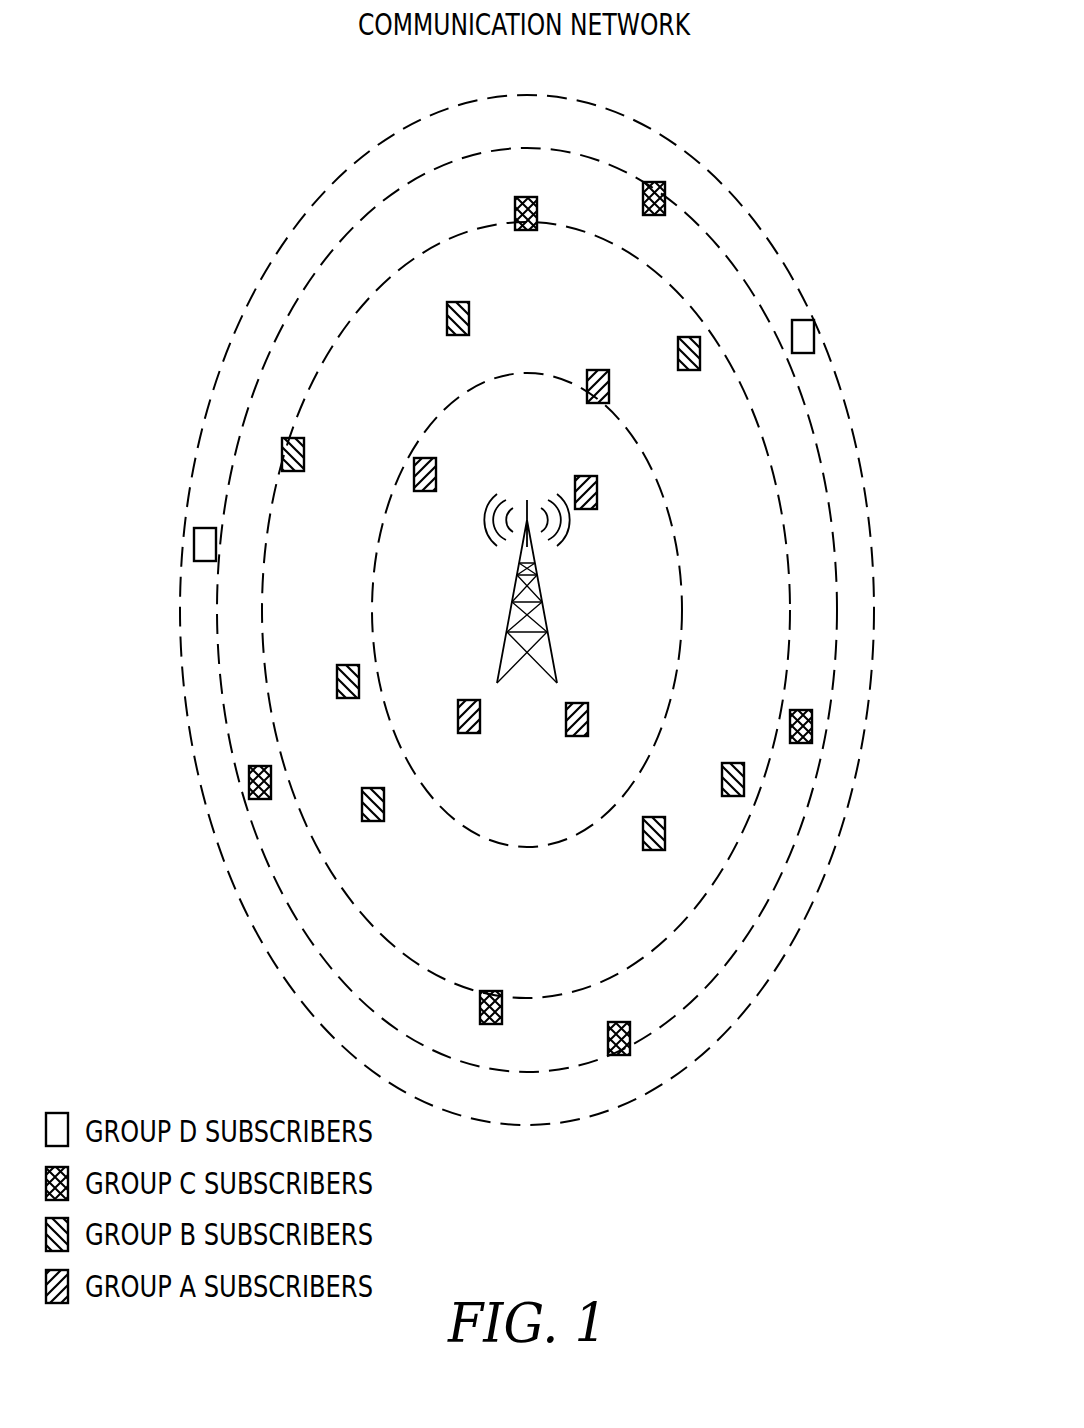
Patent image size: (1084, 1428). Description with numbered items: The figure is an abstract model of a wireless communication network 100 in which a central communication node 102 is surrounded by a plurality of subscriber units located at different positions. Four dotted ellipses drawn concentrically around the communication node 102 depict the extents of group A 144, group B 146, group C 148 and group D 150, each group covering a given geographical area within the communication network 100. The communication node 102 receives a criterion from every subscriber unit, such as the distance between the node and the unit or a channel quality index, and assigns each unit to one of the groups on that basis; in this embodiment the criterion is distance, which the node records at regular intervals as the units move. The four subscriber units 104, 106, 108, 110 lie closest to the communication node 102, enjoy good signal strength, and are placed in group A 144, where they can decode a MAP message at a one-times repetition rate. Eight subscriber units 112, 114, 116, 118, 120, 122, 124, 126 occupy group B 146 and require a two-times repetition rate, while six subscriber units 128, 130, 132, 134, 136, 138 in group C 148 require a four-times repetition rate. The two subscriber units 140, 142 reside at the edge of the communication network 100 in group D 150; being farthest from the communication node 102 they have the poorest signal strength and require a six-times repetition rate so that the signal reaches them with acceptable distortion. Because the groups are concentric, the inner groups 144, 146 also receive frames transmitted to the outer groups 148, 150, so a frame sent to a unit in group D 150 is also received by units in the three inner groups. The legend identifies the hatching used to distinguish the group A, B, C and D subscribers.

The wireless communication network 100 is at (870, 73).
The communication node 102 is at (495, 530).
The subscriber unit 104 is at (586, 476).
The subscriber unit 106 is at (578, 703).
The subscriber unit 108 is at (469, 700).
The subscriber unit 110 is at (425, 458).
The subscriber unit 112 is at (598, 370).
The subscriber unit 114 is at (458, 302).
The subscriber unit 116 is at (690, 337).
The subscriber unit 118 is at (734, 763).
The subscriber unit 120 is at (652, 850).
The subscriber unit 122 is at (372, 788).
The subscriber unit 124 is at (347, 665).
The subscriber unit 126 is at (293, 438).
The subscriber unit 128 is at (525, 197).
The subscriber unit 130 is at (655, 182).
The subscriber unit 132 is at (803, 710).
The subscriber unit 134 is at (491, 991).
The subscriber unit 136 is at (258, 766).
The subscriber unit 138 is at (613, 1022).
The subscriber unit 140 is at (803, 320).
The subscriber unit 142 is at (201, 528).
The group A 144 is at (640, 452).
The group B 146 is at (438, 244).
The group C 148 is at (528, 148).
The group D 150 is at (437, 112).